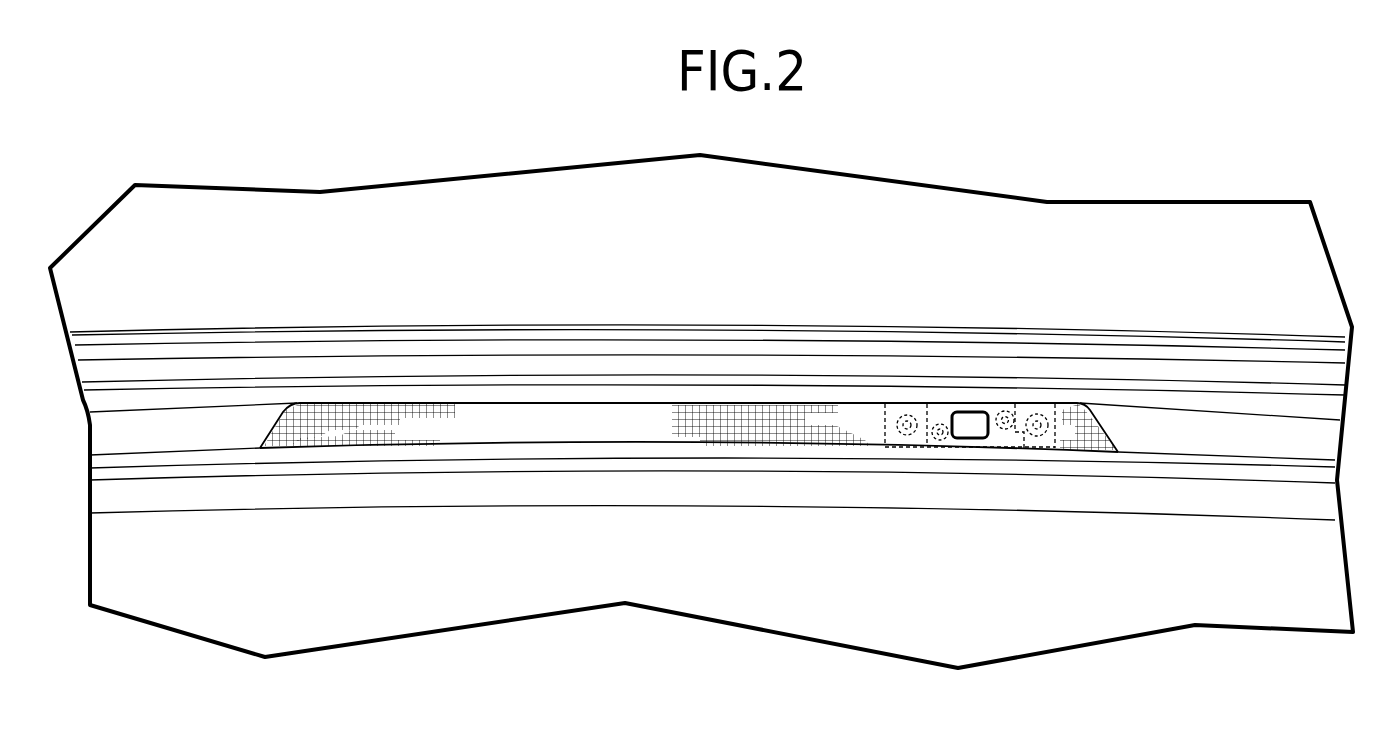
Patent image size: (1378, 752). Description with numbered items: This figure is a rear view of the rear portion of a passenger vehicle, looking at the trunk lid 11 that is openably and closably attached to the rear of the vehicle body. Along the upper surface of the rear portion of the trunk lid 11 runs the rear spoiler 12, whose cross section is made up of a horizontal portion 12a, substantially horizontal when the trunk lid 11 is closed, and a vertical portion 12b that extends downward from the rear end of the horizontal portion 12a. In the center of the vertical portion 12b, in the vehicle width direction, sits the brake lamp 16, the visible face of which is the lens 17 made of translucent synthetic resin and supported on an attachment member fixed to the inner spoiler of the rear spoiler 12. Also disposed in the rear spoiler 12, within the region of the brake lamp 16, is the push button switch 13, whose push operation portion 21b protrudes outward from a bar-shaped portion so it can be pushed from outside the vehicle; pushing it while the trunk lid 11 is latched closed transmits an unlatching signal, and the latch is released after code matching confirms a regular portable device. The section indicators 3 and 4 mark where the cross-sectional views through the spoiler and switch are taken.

The trunk lid 11 is at (1177, 228).
The rear spoiler 12 is at (682, 324).
The horizontal portion 12a is at (875, 340).
The vertical portion 12b is at (1225, 438).
The push button switch 13 is at (961, 446).
The brake lamp 16 is at (588, 395).
The lens 17 is at (607, 422).
The push operation portion 21b is at (990, 411).
The section line 3 is at (973, 250).
The section line 4 is at (850, 424).